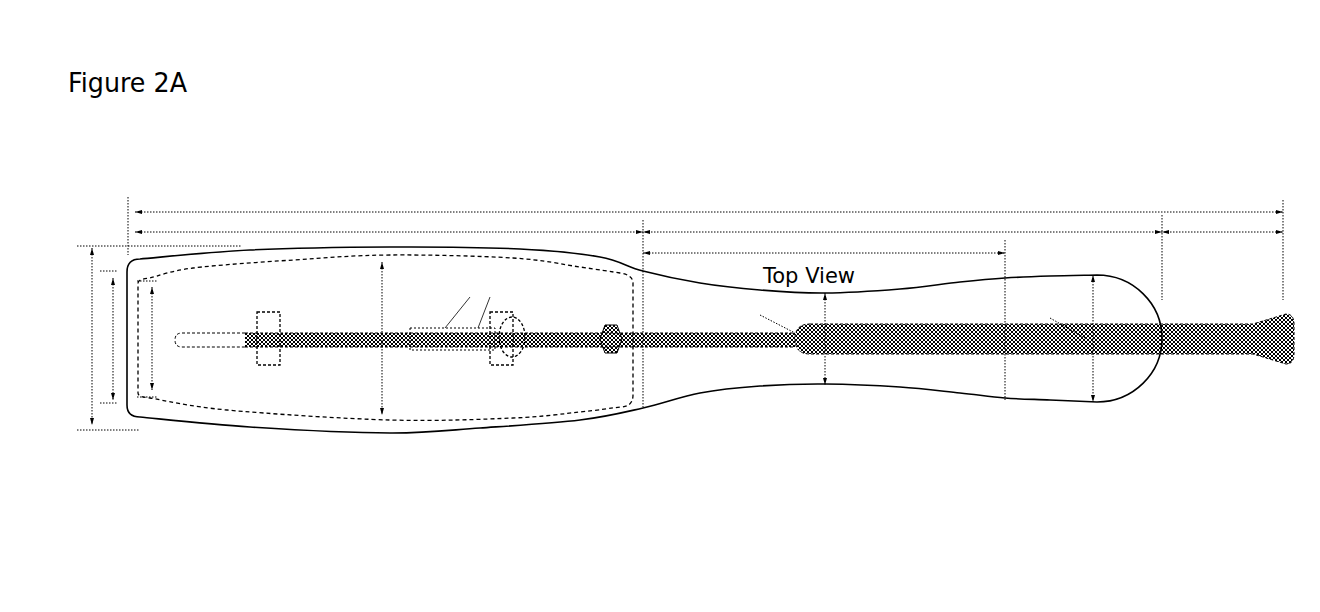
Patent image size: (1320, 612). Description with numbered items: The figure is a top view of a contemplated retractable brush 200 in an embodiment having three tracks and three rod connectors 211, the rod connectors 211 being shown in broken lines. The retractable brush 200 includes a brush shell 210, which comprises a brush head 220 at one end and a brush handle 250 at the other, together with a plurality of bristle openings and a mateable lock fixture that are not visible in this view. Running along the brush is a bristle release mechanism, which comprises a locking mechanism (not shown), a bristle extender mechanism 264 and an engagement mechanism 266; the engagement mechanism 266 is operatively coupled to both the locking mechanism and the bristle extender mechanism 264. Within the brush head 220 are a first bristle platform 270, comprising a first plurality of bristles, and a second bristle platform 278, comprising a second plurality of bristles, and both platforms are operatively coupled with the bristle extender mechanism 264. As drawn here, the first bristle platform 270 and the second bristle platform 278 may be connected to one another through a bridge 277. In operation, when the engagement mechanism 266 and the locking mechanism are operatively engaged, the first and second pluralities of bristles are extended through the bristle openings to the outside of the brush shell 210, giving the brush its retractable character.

The retractable brush 200 is at (1165, 157).
The brush shell 210 is at (913, 283).
The rod connectors 211 is at (268, 318).
The brush head 220 is at (505, 245).
The brush handle 250 is at (1147, 388).
The bristle extender mechanism 264 is at (668, 328).
The engagement mechanism 266 is at (1200, 323).
The first bristle platform 270 is at (310, 292).
The bridge 277 is at (170, 313).
The second bristle platform 278 is at (540, 377).